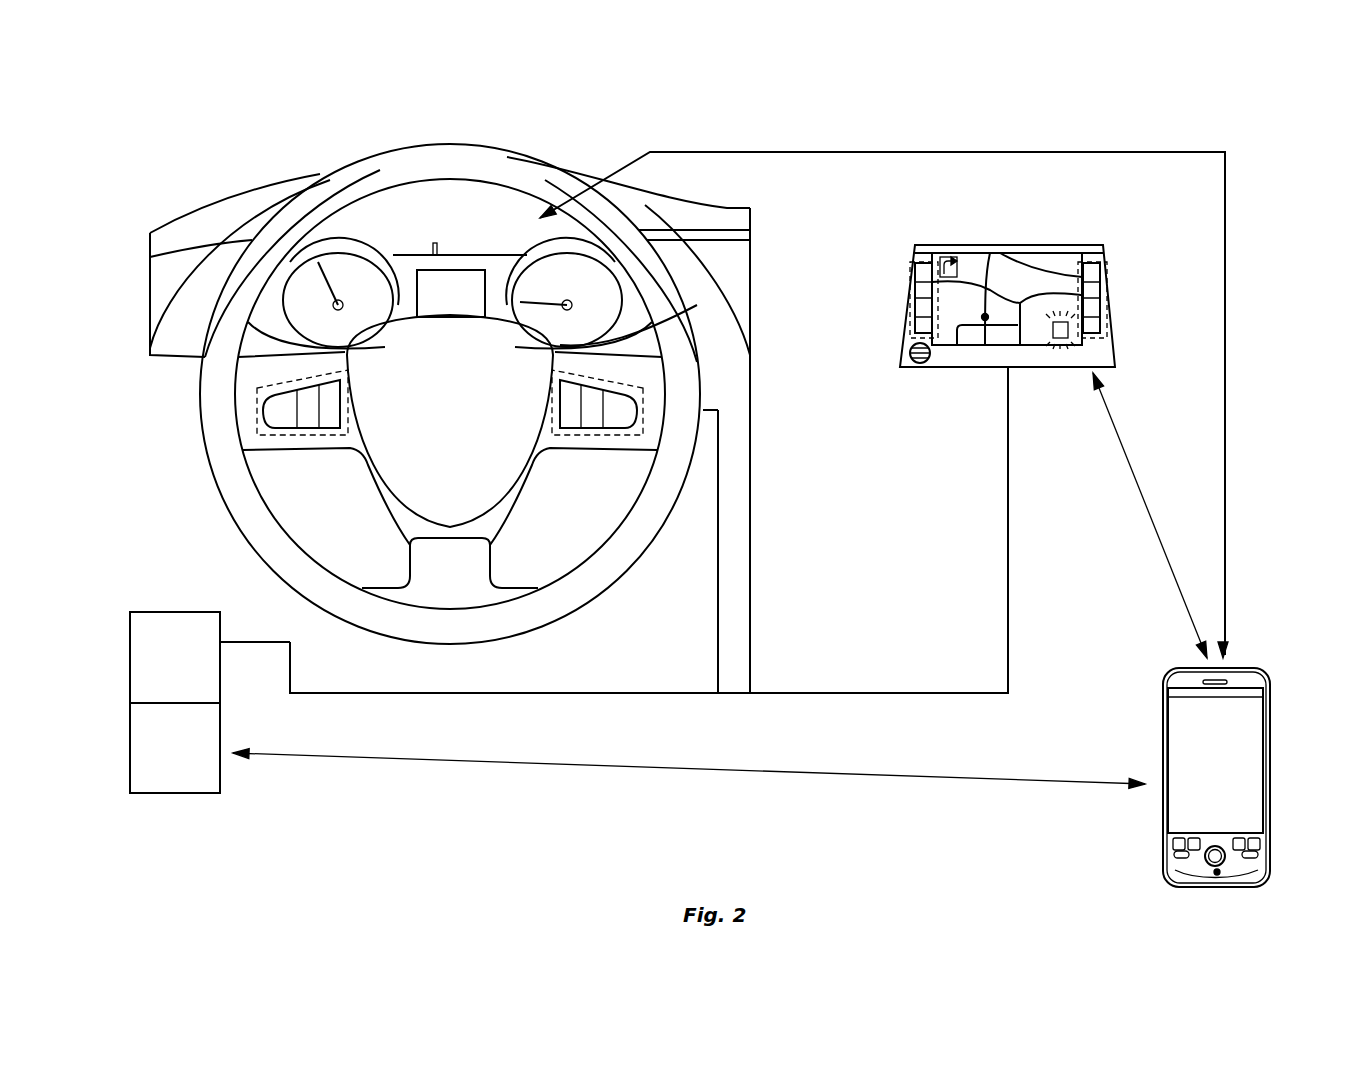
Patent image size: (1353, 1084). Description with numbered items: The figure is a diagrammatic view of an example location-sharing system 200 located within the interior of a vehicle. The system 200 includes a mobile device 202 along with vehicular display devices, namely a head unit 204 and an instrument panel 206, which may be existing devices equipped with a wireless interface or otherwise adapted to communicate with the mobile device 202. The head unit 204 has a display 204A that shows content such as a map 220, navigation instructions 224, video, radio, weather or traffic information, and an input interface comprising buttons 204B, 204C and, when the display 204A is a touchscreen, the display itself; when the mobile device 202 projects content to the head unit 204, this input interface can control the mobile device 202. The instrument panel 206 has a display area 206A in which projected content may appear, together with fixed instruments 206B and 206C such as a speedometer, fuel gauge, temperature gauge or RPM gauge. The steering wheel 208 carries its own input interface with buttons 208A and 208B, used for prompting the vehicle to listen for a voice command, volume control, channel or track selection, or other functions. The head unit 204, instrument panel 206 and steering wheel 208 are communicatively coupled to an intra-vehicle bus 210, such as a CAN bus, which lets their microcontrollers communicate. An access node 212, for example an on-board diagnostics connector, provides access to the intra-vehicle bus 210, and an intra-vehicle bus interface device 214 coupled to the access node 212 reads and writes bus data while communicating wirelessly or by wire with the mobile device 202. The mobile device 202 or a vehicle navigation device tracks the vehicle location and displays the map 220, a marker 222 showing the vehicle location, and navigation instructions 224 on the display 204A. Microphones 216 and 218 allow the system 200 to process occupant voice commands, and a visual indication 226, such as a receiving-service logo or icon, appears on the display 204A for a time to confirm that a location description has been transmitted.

The location-sharing system 200 is at (1256, 136).
The mobile device 202 is at (1163, 718).
The head unit 204 is at (985, 243).
The display 204A is at (1023, 255).
The button 204B is at (908, 307).
The button 204C is at (1107, 307).
The instrument panel 206 is at (438, 216).
The display area 206A is at (485, 267).
The fixed instrument 206B is at (313, 248).
The fixed instrument 206C is at (640, 320).
The steering wheel 208 is at (223, 500).
The button 208A is at (257, 397).
The button 208B is at (645, 403).
The intra-vehicle bus 210 is at (866, 692).
The access node 212 is at (182, 612).
The intra-vehicle bus interface (IVBI) device 214 is at (182, 793).
The microphone 216 is at (910, 353).
The microphone 218 is at (1217, 872).
The map 220 is at (1072, 250).
The marker 222 is at (985, 320).
The navigation instructions 224 is at (933, 255).
The visual indication 226 is at (1058, 338).